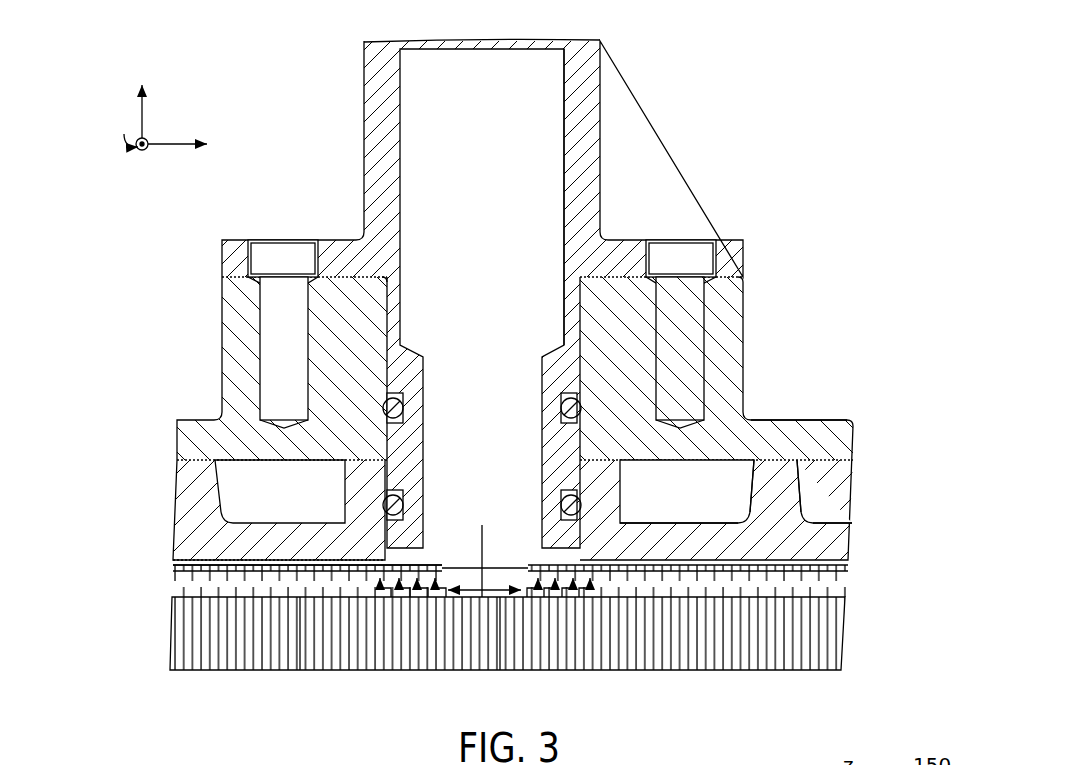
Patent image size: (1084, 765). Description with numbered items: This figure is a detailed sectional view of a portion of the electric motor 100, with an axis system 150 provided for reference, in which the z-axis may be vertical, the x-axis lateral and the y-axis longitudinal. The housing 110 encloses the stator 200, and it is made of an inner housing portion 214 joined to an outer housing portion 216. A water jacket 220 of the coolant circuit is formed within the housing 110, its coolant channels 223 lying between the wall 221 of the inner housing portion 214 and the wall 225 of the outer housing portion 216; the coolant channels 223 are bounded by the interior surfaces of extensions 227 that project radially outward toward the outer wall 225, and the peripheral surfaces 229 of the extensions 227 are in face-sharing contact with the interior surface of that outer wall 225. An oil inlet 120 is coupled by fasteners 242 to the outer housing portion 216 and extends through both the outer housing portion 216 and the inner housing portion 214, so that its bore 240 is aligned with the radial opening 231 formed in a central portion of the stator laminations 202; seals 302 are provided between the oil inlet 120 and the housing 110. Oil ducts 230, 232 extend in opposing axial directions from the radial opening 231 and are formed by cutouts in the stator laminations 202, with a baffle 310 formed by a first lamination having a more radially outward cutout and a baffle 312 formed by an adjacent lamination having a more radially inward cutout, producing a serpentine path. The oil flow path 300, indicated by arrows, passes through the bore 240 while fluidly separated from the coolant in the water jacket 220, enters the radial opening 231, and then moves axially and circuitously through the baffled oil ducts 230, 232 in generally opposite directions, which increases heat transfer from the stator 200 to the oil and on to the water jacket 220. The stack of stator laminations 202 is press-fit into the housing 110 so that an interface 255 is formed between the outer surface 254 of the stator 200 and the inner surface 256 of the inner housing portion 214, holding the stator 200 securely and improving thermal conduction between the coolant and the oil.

The electric motor 100 is at (849, 62).
The housing 110 is at (118, 303).
The oil inlet 120 is at (364, 106).
The axis system 150 is at (213, 97).
The stator 200 is at (539, 674).
The stator laminations 202 is at (437, 655).
The inner housing portion 214 is at (183, 490).
The outer housing portion 216 is at (222, 353).
The water jacket 220 is at (861, 487).
The wall of the inner housing portion 221 is at (832, 545).
The coolant channels 223 is at (720, 486).
The wall of the outer housing portion 225 is at (822, 440).
The extensions 227 is at (813, 425).
The peripheral surfaces of the extensions 229 is at (776, 479).
The oil duct 230 is at (171, 587).
The radial opening 231 is at (515, 571).
The oil duct 232 is at (846, 582).
The bore 240 is at (560, 63).
The fasteners 242 is at (690, 240).
The outer surface of the stator 254 is at (187, 562).
The interface 255 is at (170, 565).
The inner surface of the inner housing portion 256 is at (838, 564).
The oil flow path 300 is at (482, 530).
The seals 302 is at (391, 506).
The baffle 310 is at (195, 589).
The baffle 312 is at (204, 578).